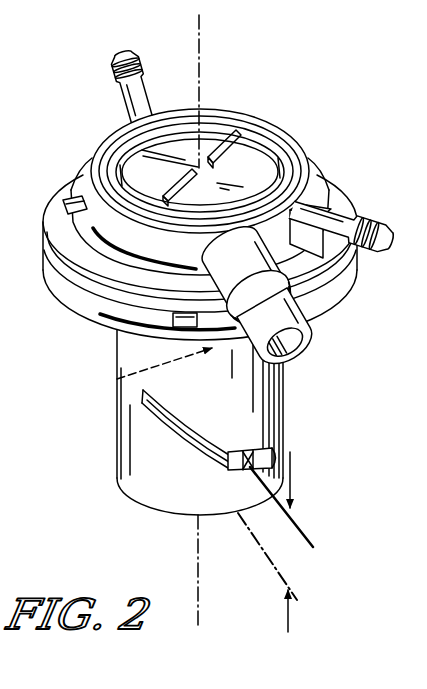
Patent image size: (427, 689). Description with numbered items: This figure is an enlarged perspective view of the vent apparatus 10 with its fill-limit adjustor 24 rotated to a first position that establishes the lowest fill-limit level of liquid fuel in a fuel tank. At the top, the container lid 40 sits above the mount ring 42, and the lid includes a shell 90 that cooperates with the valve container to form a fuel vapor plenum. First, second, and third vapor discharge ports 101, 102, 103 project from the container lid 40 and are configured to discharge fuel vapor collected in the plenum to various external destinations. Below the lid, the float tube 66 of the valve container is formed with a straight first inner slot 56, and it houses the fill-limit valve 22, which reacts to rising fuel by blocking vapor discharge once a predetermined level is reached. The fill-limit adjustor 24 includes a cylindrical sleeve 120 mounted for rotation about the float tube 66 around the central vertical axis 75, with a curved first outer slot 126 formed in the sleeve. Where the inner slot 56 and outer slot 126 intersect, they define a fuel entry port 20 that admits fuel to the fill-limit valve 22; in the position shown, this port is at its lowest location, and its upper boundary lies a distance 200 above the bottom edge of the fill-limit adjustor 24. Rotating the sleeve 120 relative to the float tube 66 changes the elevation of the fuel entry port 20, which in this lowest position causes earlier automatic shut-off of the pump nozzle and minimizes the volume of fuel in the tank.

The vent apparatus 10 is at (225, 265).
The fuel entry port 20 is at (196, 422).
The fill-limit valve 22 is at (117, 379).
The fill-limit adjustor 24 is at (116, 469).
The container lid 40 is at (88, 147).
The mount ring 42 is at (86, 323).
The first inner slot 56 is at (246, 472).
The float tube 66 is at (179, 432).
The central vertical axis 75 is at (200, 81).
The shell 90 is at (311, 138).
The first vapor discharge port 101 is at (322, 337).
The second vapor discharge port 102 is at (110, 72).
The third vapor discharge port 103 is at (379, 219).
The cylindrical sleeve 120 is at (128, 437).
The first outer slot 126 is at (160, 418).
The distance 200 is at (292, 488).